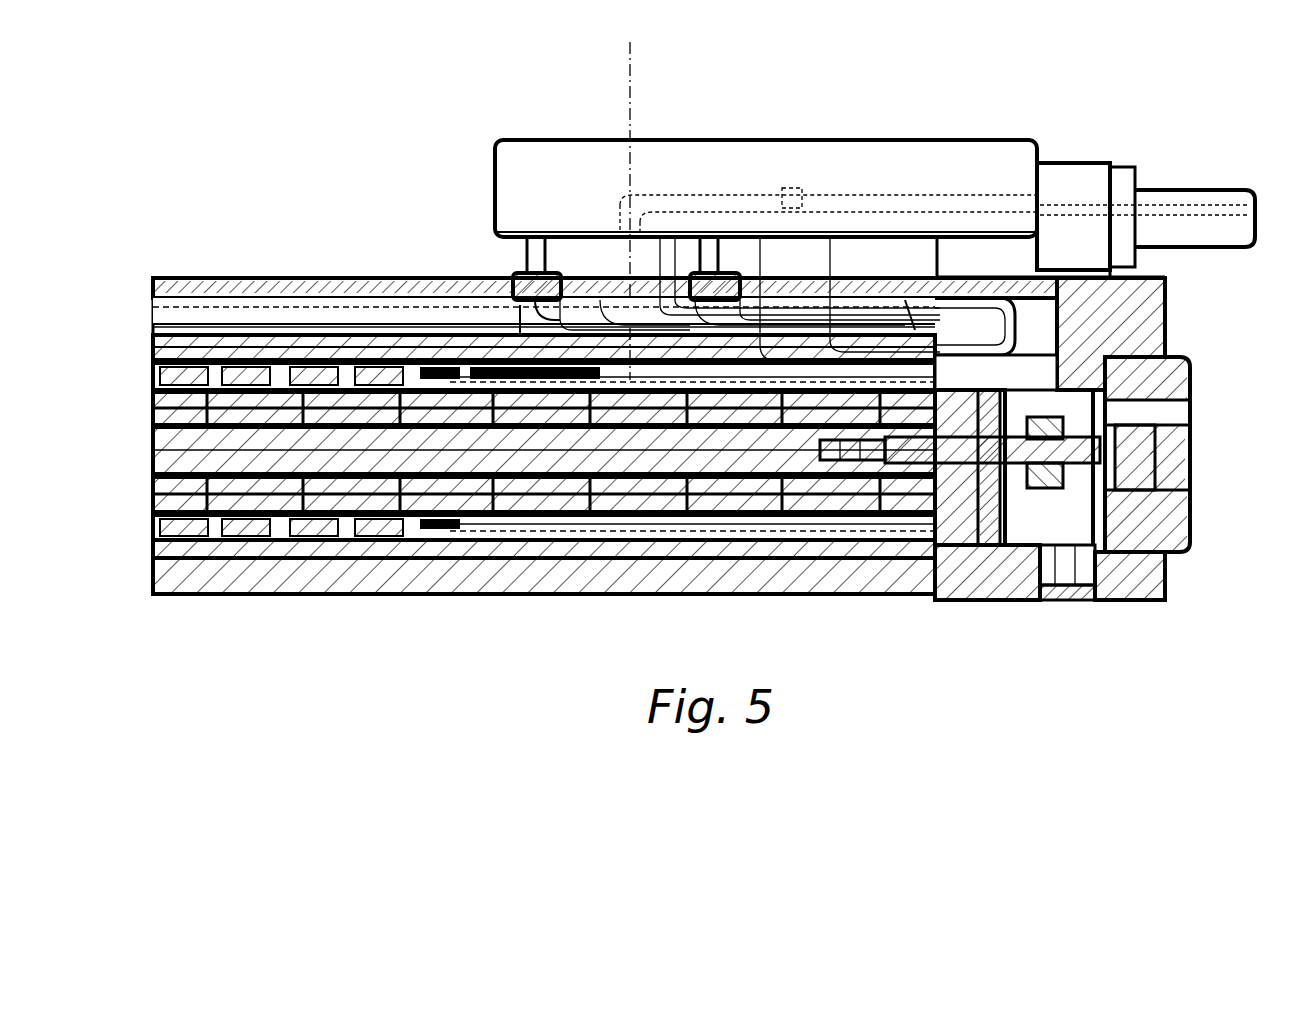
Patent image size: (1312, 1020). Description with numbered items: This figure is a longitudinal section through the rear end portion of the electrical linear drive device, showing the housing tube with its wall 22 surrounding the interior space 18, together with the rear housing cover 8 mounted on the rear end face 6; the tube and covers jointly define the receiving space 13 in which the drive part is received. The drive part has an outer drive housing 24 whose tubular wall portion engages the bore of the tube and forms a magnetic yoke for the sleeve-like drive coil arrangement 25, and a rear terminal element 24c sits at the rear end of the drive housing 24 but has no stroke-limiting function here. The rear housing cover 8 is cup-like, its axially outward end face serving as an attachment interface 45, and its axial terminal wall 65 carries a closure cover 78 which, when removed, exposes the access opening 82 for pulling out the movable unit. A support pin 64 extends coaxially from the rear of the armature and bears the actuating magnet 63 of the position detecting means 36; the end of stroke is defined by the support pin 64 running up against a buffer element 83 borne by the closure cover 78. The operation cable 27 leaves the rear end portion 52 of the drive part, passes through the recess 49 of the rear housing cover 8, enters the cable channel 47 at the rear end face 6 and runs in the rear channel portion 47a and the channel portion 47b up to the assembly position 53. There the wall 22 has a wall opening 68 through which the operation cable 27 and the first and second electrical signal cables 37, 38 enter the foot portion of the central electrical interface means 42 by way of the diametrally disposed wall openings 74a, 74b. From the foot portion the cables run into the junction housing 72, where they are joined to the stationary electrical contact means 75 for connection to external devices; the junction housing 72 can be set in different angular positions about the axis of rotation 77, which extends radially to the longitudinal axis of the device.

The rear end face 6 is at (945, 572).
The rear housing cover 8 is at (1140, 582).
The receiving space 13 is at (548, 556).
The interior space 18 is at (236, 562).
The wall 22 is at (200, 578).
The drive housing 24 is at (596, 527).
The rear terminal element 24c is at (888, 522).
The drive coil arrangement 25 is at (330, 548).
The operation cable 27 is at (720, 205).
The position detecting means 36 is at (1068, 424).
The first electrical signal cable 37 is at (325, 312).
The second electrical signal cable 38 is at (760, 205).
The central electrical interface means 42 is at (606, 166).
The attachment interface 45 is at (1168, 293).
The cable channel 47 is at (210, 310).
The rear channel portion 47a is at (912, 320).
The channel portion 47b is at (378, 312).
The recess 49 is at (1000, 303).
The rear end portion 52 is at (1060, 333).
The assembly position 53 is at (598, 258).
The actuating magnet 63 is at (1045, 492).
The support pin 64 is at (996, 548).
The axial terminal wall 65 is at (1150, 565).
The wall opening 68 is at (532, 298).
The junction housing 72 is at (988, 160).
The wall opening 74a is at (742, 288).
The wall opening 74b is at (513, 292).
The electrical contact means 75 is at (792, 186).
The axis of rotation 77 is at (632, 58).
The closure cover 78 is at (1158, 497).
The access opening 82 is at (1150, 395).
The buffer element 83 is at (1163, 448).